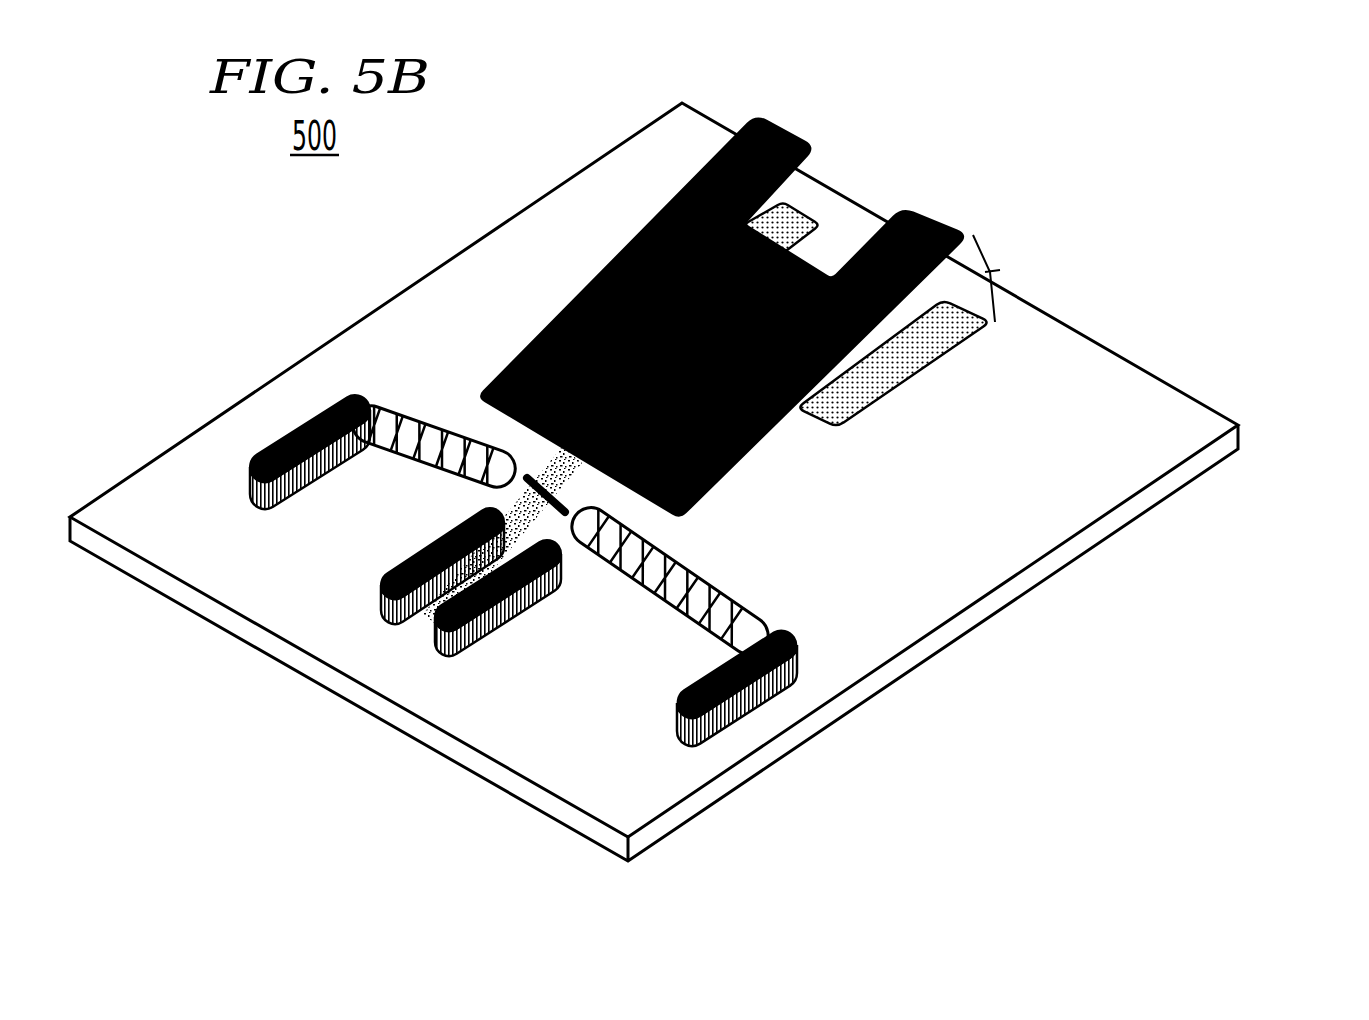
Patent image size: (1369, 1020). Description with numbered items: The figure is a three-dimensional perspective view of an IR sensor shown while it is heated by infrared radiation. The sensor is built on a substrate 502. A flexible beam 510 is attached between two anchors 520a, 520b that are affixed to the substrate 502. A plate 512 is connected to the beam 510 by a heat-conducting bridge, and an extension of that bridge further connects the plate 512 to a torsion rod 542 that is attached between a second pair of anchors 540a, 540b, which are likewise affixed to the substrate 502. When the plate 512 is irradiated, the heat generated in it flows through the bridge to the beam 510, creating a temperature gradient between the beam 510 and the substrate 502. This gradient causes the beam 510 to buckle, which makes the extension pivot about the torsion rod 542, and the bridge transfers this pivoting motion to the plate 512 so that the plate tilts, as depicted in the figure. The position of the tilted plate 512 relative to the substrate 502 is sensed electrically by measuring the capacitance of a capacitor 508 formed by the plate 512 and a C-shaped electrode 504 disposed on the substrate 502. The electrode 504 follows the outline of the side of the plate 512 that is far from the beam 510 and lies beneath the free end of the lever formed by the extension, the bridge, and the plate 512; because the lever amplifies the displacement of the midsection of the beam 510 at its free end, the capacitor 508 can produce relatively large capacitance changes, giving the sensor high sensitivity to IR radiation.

The substrate 502 is at (1244, 440).
The C-shaped electrode 504 is at (880, 395).
The capacitor 508 is at (1010, 278).
The flexible beam 510 is at (690, 563).
The plate 512 is at (545, 330).
The anchor 520a is at (253, 483).
The anchor 520b is at (793, 650).
The anchor 540a is at (387, 601).
The anchor 540b is at (470, 632).
The torsion rod 542 is at (420, 612).